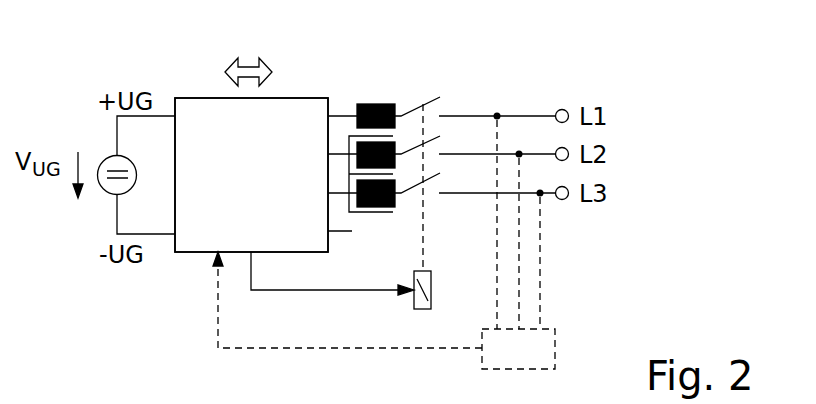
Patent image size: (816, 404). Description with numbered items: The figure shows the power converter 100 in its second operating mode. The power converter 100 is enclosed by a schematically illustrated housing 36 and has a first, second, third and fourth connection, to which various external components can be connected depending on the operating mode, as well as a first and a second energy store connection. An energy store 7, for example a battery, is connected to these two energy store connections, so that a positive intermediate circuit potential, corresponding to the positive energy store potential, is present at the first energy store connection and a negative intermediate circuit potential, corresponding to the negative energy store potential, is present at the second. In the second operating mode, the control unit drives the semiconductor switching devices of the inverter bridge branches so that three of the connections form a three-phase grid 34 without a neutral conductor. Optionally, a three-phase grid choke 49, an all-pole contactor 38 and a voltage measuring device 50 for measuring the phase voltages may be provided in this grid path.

The housing 36 is at (188, 97).
The power converter 100 is at (300, 97).
The energy store 7 is at (108, 158).
The three-phase grid 34 is at (648, 103).
The all-pole contactor 38 is at (425, 282).
The three-phase grid choke 49 is at (376, 214).
The voltage measuring device 50 is at (518, 349).